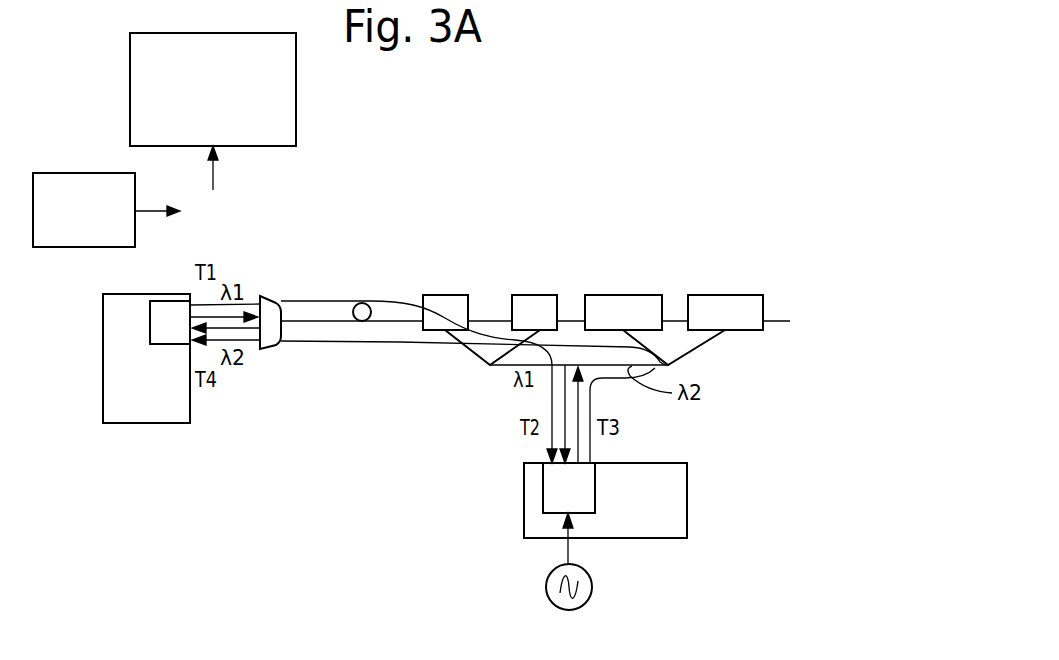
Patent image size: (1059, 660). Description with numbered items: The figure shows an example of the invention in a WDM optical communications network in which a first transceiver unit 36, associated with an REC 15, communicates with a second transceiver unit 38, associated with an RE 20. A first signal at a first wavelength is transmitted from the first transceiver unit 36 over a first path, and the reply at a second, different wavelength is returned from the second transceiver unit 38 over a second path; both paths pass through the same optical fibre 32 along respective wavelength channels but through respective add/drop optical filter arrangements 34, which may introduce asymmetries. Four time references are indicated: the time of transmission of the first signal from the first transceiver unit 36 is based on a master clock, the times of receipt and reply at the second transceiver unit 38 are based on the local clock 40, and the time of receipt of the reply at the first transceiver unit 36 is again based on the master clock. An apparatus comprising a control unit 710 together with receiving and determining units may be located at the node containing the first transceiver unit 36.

The control unit 710 is at (73, 173).
The REC 15 is at (160, 413).
The first transceiver unit 36 is at (163, 320).
The optical fibre 32 is at (365, 302).
The add/drop optical filter arrangements 34 is at (557, 287).
The RE 20 is at (663, 517).
The second transceiver unit 38 is at (555, 489).
The local clock 40 is at (548, 583).